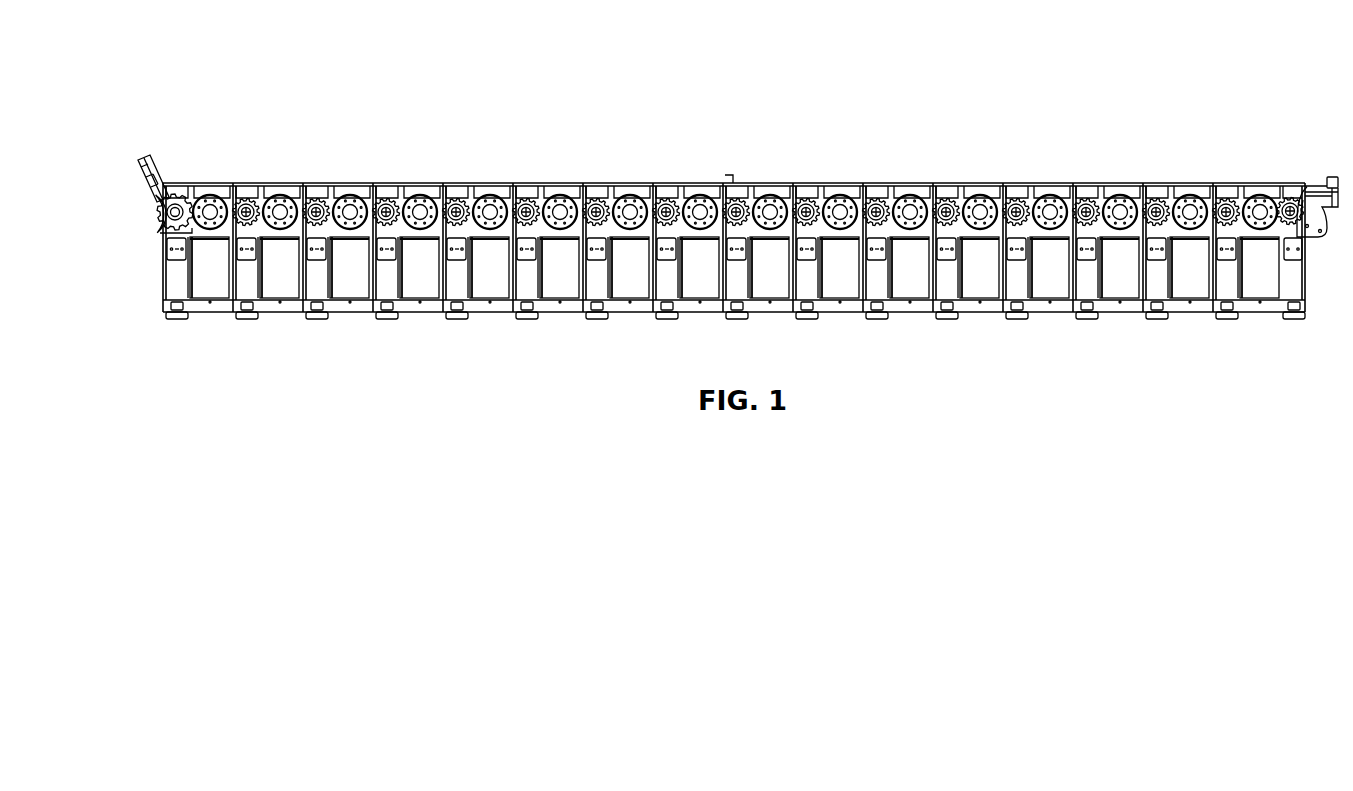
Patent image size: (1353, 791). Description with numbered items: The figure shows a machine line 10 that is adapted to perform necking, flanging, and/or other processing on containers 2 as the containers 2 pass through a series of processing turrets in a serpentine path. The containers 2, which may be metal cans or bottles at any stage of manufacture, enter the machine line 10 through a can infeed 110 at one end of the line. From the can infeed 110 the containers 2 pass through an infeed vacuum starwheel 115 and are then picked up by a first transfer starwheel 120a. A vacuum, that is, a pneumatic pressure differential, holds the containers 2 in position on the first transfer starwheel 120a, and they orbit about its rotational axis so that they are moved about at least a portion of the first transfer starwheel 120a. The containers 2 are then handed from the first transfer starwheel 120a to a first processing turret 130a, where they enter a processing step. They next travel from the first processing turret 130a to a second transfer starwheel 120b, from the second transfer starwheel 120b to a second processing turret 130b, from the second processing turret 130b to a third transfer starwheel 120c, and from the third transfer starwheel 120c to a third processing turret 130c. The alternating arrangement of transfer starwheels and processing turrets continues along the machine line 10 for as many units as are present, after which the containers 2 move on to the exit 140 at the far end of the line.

The machine line 10 is at (566, 68).
The can infeed 110 is at (151, 167).
The container 2 is at (155, 175).
The infeed vacuum starwheel 115 is at (160, 222).
The first transfer starwheel 120a is at (214, 196).
The second transfer starwheel 120b is at (290, 200).
The third transfer starwheel 120c is at (352, 226).
The first processing turret 130a is at (252, 202).
The second processing turret 130b is at (318, 224).
The third processing turret 130c is at (390, 196).
The exit 140 is at (1332, 177).